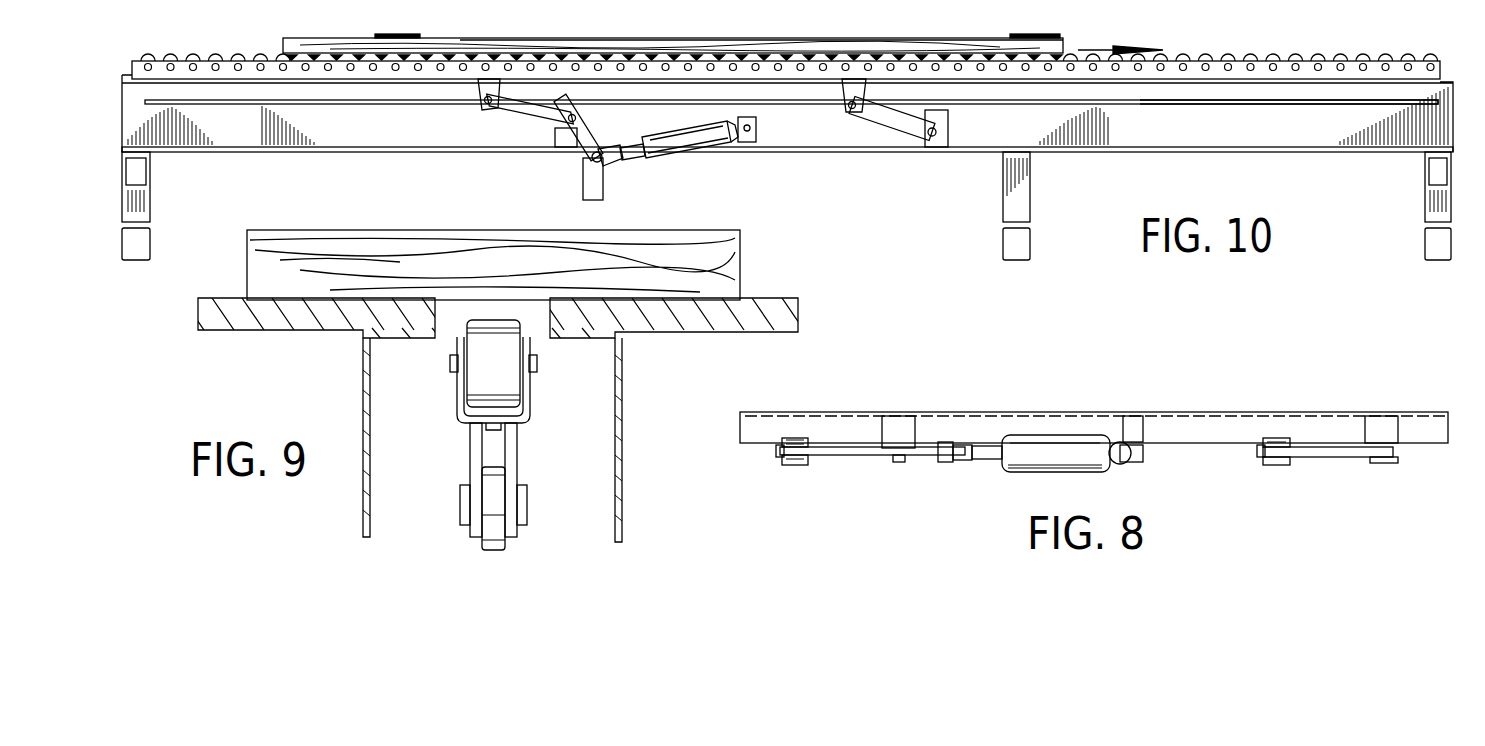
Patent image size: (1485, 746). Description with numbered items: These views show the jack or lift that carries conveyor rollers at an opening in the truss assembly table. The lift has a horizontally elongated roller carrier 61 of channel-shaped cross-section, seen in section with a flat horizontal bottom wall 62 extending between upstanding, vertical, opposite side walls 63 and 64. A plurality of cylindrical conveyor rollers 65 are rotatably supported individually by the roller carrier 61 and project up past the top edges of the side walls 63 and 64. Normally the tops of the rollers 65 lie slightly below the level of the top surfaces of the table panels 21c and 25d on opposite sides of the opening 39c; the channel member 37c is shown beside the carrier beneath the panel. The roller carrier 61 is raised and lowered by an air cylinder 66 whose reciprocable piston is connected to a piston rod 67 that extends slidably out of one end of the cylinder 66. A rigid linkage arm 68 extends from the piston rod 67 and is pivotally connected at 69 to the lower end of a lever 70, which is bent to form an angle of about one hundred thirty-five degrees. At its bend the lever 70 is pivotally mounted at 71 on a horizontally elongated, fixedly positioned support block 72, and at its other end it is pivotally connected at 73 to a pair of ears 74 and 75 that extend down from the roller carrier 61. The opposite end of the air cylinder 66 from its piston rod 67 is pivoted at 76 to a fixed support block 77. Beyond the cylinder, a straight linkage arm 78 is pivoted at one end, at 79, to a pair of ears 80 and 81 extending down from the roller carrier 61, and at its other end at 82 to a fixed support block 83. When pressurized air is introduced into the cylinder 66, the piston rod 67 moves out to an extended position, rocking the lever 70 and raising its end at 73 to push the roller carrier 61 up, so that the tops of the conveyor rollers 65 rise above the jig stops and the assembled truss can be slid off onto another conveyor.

In FIG. 10, the roller carrier 61 is at (390, 92).
In FIG. 9, the roller carrier 61 is at (444, 418).
In FIG. 10, the side wall 63 is at (1168, 76).
In FIG. 9, the side wall 63 is at (532, 396).
In FIG. 10, the conveyor rollers 65 is at (532, 58).
In FIG. 9, the conveyor rollers 65 is at (482, 321).
In FIG. 10, the air cylinder 66 is at (690, 151).
In FIG. 8, the air cylinder 66 is at (1055, 472).
In FIG. 10, the piston rod 67 is at (640, 160).
In FIG. 8, the piston rod 67 is at (985, 460).
In FIG. 10, the linkage arm 68 is at (615, 167).
In FIG. 8, the linkage arm 68 is at (970, 445).
In FIG. 10, the pivot 69 is at (586, 164).
In FIG. 8, the pivot 69 is at (943, 463).
In FIG. 10, the lever 70 is at (532, 108).
In FIG. 9, the lever 70 is at (498, 488).
In FIG. 8, the lever 70 is at (858, 456).
In FIG. 10, the pivot 71 is at (583, 100).
In FIG. 8, the pivot 71 is at (897, 463).
In FIG. 8, the support block 72 is at (900, 425).
In FIG. 10, the pivot 73 is at (483, 108).
In FIG. 9, the pivot 73 is at (522, 500).
In FIG. 8, the pivot 73 is at (790, 466).
In FIG. 10, the ear 74 is at (472, 88).
In FIG. 9, the ear 74 is at (518, 458).
In FIG. 8, the ear 74 is at (806, 457).
In FIG. 9, the ear 75 is at (470, 458).
In FIG. 8, the ear 75 is at (802, 440).
In FIG. 8, the pivot 76 is at (1130, 464).
In FIG. 10, the support block 77 is at (758, 130).
In FIG. 8, the support block 77 is at (1130, 430).
In FIG. 10, the linkage arm 78 is at (890, 105).
In FIG. 8, the linkage arm 78 is at (1333, 458).
In FIG. 10, the pivot 79 is at (850, 108).
In FIG. 8, the pivot 79 is at (1278, 466).
In FIG. 10, the ear 80 is at (842, 88).
In FIG. 8, the ear 80 is at (1262, 460).
In FIG. 8, the ear 81 is at (1283, 445).
In FIG. 10, the pivot 82 is at (928, 140).
In FIG. 8, the pivot 82 is at (1382, 464).
In FIG. 10, the support block 83 is at (949, 117).
In FIG. 8, the support block 83 is at (1380, 430).
In FIG. 9, the table panel 25d is at (228, 300).
In FIG. 9, the table panel 21c is at (765, 300).
In FIG. 9, the opening 39c is at (532, 318).
In FIG. 9, the channel member 37c is at (623, 392).
In FIG. 9, the bottom wall 62 is at (524, 421).
In FIG. 9, the side wall 64 is at (457, 389).